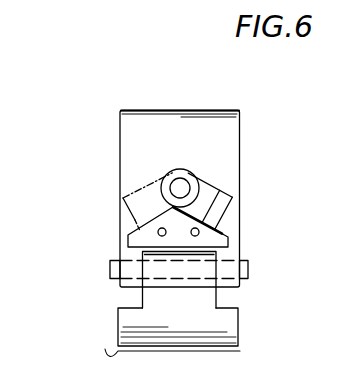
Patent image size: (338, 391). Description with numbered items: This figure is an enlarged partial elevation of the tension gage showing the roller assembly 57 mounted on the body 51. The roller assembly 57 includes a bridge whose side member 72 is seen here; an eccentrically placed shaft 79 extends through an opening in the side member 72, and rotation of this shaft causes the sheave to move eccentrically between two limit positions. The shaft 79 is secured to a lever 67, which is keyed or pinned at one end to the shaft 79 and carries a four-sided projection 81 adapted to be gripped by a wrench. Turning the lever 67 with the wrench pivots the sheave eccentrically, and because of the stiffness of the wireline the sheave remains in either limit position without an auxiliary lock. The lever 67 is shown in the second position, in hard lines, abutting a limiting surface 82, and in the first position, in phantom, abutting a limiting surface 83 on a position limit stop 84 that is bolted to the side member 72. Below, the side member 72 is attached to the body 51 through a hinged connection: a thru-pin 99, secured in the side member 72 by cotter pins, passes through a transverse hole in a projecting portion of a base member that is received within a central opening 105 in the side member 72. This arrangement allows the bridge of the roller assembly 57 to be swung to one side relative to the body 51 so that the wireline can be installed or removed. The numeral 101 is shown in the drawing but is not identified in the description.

The body 51 is at (242, 352).
The roller assembly 57 is at (187, 108).
The lever 67 is at (216, 209).
The side member 72 is at (218, 133).
The shaft 79 is at (183, 187).
The four-sided projection 81 is at (215, 193).
The limiting surface 82 is at (222, 224).
The limiting surface 83 is at (151, 219).
The position limit stop 84 is at (143, 240).
The thru-pin 99 is at (248, 268).
The bracket ear 101 is at (125, 262).
The central opening 105 is at (217, 270).